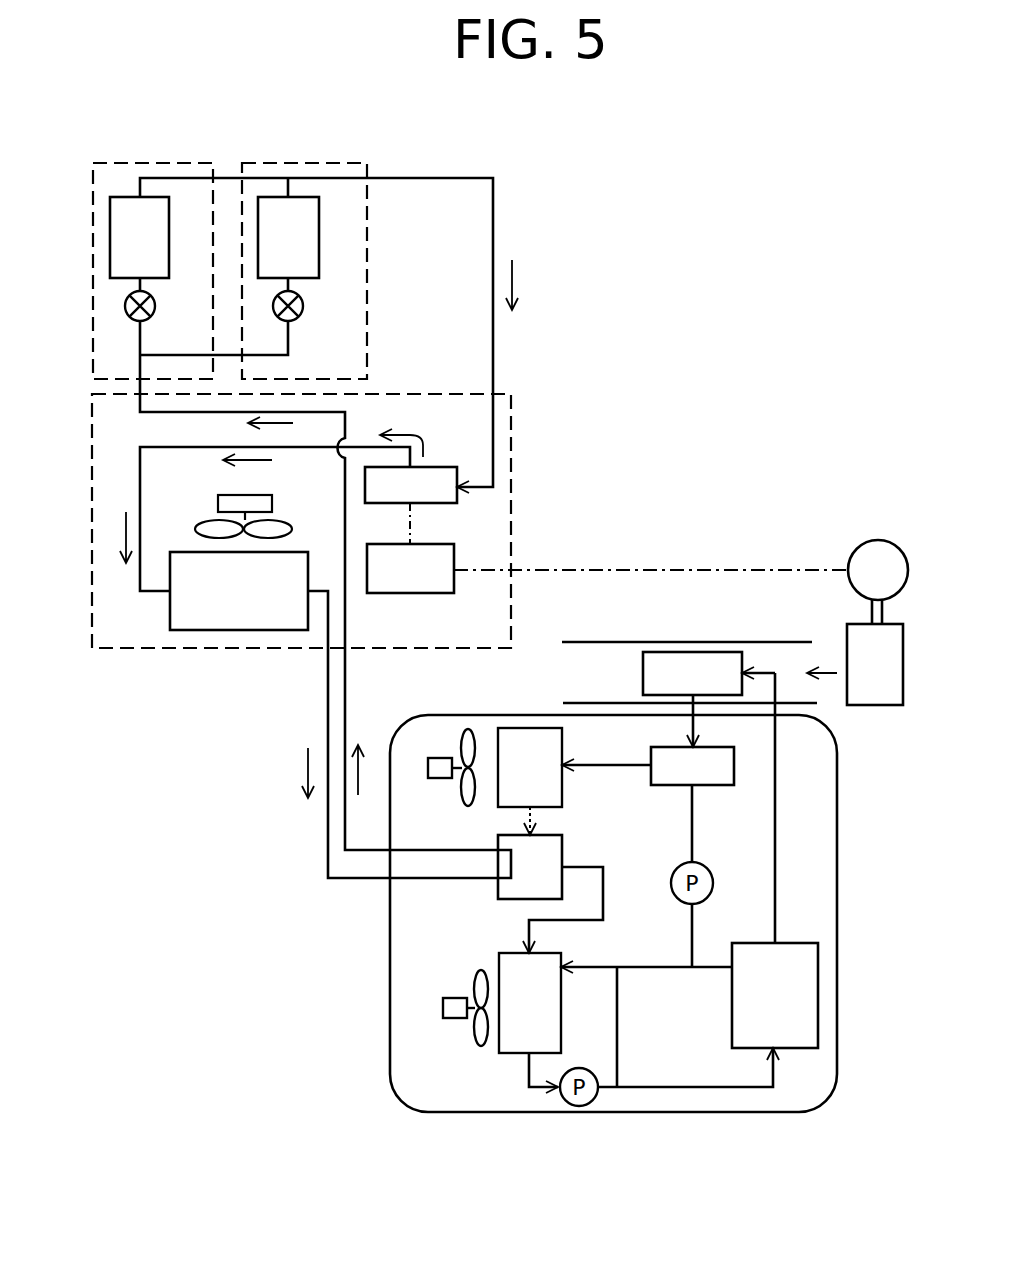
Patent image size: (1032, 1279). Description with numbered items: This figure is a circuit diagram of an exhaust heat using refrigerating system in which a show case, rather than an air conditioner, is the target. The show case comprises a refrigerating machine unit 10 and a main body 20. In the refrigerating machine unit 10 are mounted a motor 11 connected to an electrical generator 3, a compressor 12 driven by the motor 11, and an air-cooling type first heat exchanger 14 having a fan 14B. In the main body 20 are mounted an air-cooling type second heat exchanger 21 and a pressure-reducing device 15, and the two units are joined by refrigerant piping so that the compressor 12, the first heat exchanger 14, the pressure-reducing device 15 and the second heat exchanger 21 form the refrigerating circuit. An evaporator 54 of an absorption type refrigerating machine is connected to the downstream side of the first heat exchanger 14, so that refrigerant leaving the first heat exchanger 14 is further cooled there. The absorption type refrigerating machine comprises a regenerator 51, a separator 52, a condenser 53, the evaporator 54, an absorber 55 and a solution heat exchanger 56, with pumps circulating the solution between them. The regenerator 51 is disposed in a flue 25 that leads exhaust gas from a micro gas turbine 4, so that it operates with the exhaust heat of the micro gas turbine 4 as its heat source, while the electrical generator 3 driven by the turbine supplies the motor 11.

The electrical generator 3 is at (873, 540).
The micro gas turbine 4 is at (875, 705).
The refrigerating machine unit 10 is at (92, 507).
The motor 11 is at (454, 548).
The compressor 12 is at (457, 500).
The first heat exchanger 14 is at (170, 613).
The fan 14B is at (203, 523).
The pressure-reducing device 15 is at (125, 306).
The main body 20 is at (92, 240).
The second heat exchanger 21 is at (127, 197).
The flue 25 is at (577, 642).
The regenerator 51 is at (697, 652).
The separator 52 is at (722, 785).
The condenser 53 is at (562, 745).
The evaporator 54 is at (562, 850).
The absorber 55 is at (499, 955).
The solution heat exchanger 56 is at (808, 943).